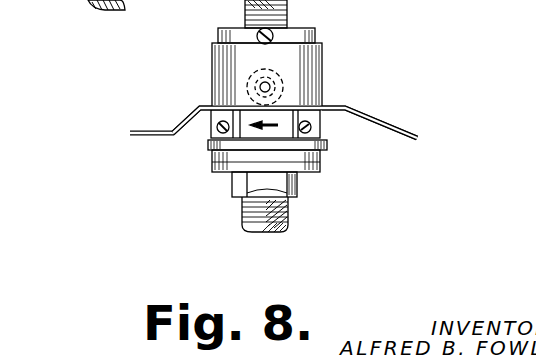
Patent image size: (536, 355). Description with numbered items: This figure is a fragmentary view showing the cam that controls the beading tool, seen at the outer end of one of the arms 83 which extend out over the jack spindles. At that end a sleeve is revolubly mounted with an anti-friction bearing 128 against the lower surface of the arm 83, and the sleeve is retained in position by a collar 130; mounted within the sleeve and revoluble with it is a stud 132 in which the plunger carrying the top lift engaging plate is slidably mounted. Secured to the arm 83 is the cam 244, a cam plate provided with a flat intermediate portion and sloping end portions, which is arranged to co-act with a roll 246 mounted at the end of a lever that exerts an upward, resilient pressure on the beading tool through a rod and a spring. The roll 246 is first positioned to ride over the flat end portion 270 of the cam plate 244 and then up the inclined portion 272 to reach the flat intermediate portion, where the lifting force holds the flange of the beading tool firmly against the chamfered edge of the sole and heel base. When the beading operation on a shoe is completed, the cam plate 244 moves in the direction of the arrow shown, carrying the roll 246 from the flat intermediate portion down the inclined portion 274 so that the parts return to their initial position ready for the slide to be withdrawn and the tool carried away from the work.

The arm 83 is at (322, 76).
The anti-friction bearing 128 is at (327, 150).
The collar 130 is at (315, 31).
The stud 132 is at (288, 212).
The cam 244 is at (213, 155).
The roll 246 is at (247, 77).
The flat end portion 270 is at (145, 135).
The inclined portion 272 is at (197, 112).
The inclined portion 274 is at (390, 125).